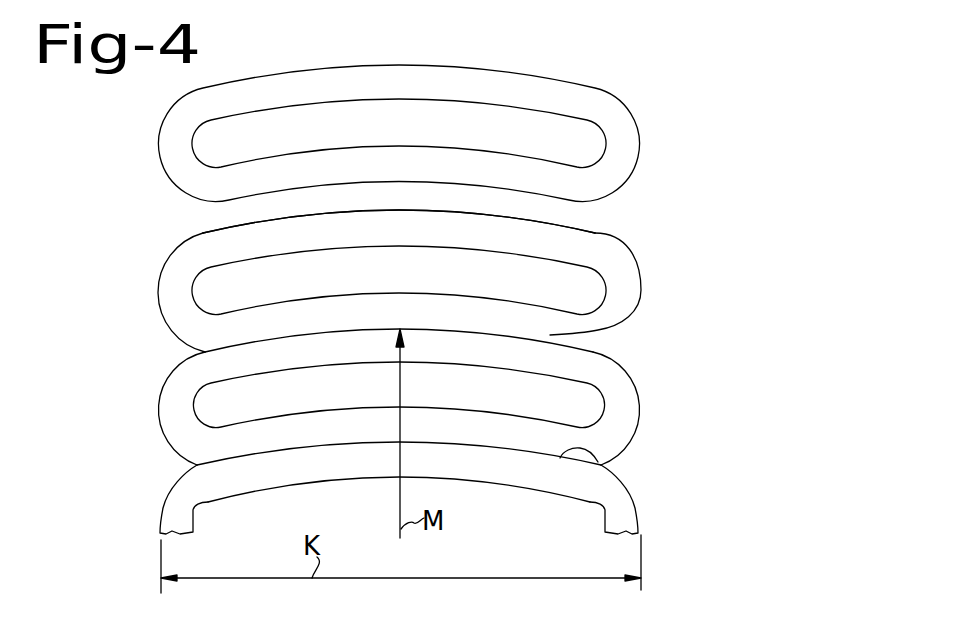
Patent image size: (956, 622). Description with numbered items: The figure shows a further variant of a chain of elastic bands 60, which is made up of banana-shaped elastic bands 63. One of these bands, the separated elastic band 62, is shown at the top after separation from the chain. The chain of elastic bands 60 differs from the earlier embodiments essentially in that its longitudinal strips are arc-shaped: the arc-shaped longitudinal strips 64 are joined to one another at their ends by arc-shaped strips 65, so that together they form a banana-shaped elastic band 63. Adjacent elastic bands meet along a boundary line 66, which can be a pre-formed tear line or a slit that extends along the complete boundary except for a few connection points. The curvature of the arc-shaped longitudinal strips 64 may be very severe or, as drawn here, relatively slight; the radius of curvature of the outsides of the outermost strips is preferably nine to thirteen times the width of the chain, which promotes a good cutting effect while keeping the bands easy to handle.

The chain of elastic bands 60 is at (648, 432).
The separated elastic band 62 is at (655, 143).
The banana-shaped elastic band 63 is at (653, 304).
The arc-shaped longitudinal strip 64 is at (623, 333).
The arc-shaped strip 65 is at (618, 322).
The boundary line 66 is at (600, 468).